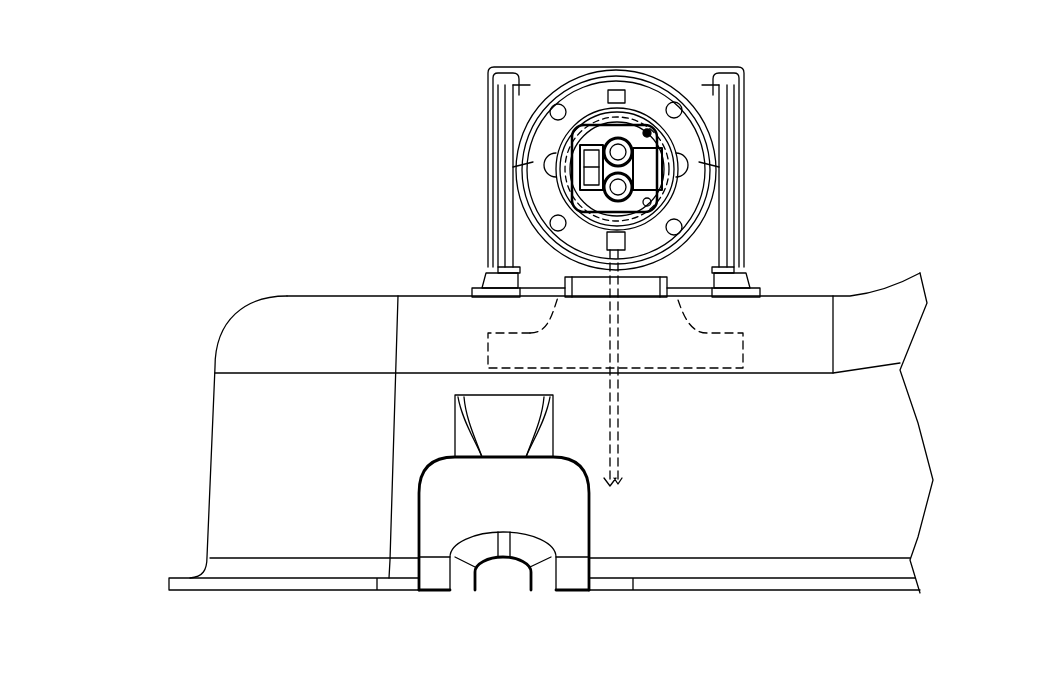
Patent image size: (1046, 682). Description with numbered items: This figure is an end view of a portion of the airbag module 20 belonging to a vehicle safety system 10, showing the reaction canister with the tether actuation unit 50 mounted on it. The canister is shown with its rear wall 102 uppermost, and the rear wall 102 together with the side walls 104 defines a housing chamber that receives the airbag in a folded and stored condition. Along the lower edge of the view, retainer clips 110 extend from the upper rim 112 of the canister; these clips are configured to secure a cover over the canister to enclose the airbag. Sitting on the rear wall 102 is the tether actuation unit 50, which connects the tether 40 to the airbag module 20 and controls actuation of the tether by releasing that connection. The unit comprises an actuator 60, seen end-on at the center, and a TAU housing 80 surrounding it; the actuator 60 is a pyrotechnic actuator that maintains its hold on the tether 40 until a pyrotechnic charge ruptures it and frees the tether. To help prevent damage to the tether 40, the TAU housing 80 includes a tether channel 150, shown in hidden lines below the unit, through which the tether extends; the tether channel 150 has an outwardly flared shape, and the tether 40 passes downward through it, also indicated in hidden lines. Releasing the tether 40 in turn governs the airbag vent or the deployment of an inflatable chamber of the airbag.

The vehicle safety system 10 is at (160, 108).
The airbag module 20 is at (257, 122).
The tether 40 is at (615, 440).
The tether actuation unit 50 is at (430, 95).
The actuator 60 is at (638, 92).
The TAU housing 80 is at (728, 115).
The rear wall 102 is at (348, 290).
The side walls 104 is at (258, 438).
The retainer clips 110 is at (452, 510).
The upper rim 112 is at (313, 583).
The tether channel 150 is at (655, 347).